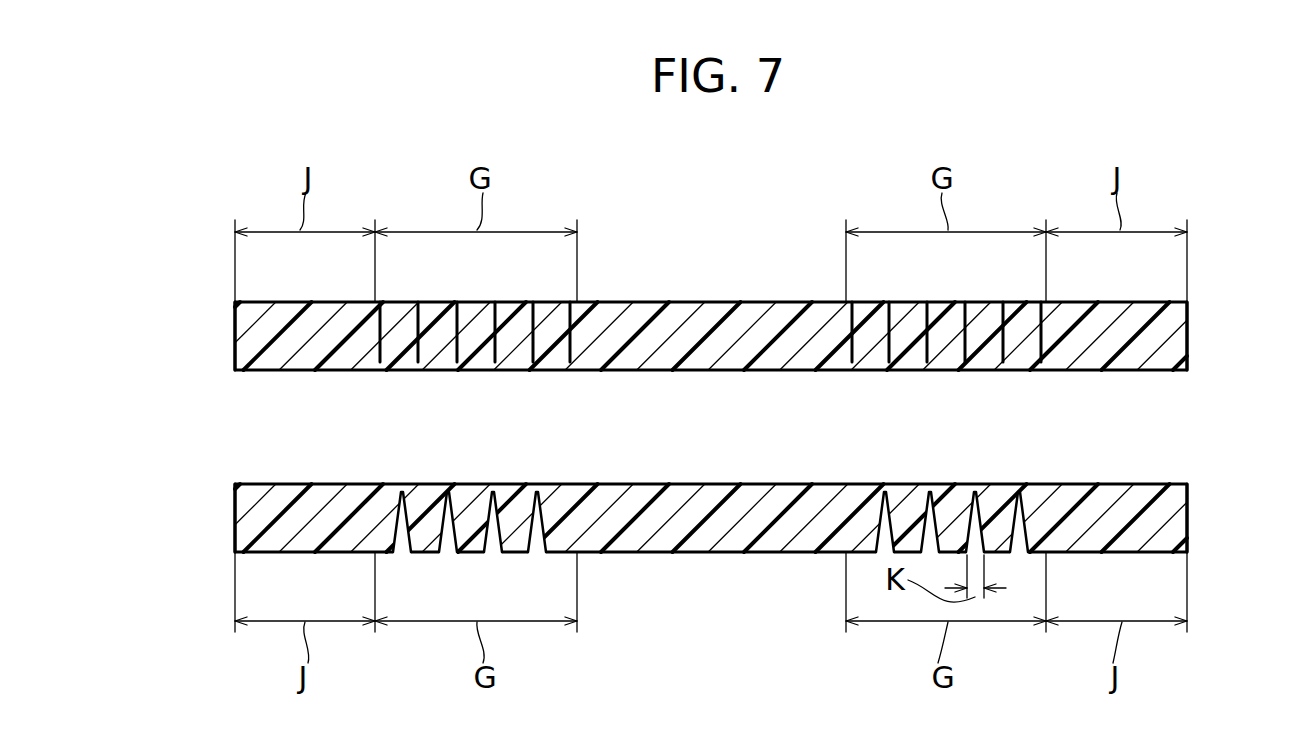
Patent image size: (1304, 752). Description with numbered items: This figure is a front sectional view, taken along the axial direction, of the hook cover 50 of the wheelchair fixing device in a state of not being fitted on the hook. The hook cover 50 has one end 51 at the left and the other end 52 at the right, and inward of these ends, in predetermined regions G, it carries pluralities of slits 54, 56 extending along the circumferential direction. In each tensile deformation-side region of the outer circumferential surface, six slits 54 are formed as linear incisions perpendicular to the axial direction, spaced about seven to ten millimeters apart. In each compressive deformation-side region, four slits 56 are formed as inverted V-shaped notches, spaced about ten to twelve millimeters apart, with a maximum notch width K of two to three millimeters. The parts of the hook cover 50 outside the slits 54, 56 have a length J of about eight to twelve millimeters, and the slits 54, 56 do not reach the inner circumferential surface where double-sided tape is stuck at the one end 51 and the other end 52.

The hook cover 50 is at (717, 376).
The one end 51 is at (235, 302).
The other end 52 is at (1187, 300).
The slits 54 is at (497, 343).
The slits 56 is at (404, 505).